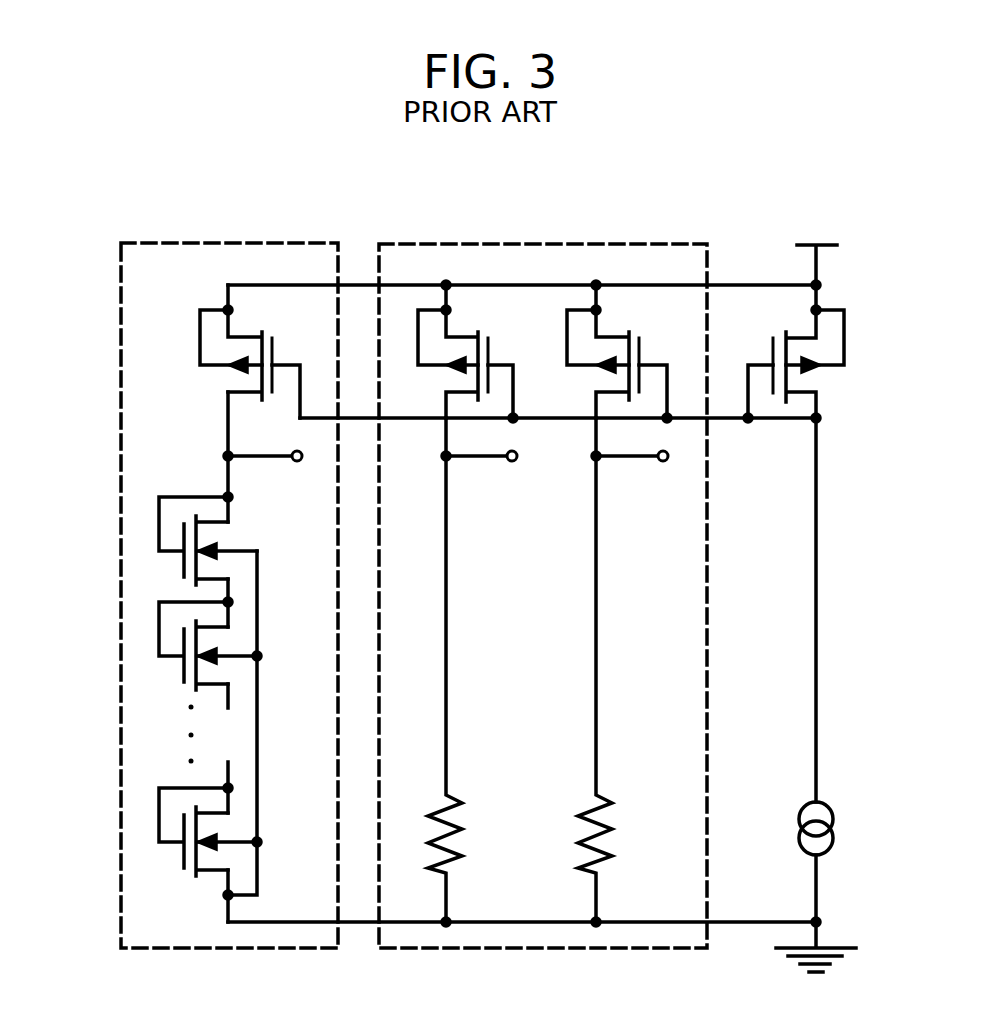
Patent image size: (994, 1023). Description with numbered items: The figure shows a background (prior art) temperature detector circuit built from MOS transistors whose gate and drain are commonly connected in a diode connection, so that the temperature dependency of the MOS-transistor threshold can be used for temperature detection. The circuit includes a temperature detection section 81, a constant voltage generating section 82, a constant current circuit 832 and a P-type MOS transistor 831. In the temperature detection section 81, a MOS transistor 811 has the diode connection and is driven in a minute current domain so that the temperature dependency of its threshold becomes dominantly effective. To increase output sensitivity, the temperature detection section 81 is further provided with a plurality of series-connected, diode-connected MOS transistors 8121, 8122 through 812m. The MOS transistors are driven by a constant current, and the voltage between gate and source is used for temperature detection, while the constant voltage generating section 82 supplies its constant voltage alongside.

The temperature detection section 81 is at (285, 243).
The constant voltage generating section 82 is at (647, 244).
The MOS transistor 811 is at (246, 329).
The series-connected MOS transistor 8121 is at (162, 563).
The series-connected MOS transistor 8122 is at (162, 672).
The series-connected MOS transistor 812m is at (162, 862).
The P-type MOS transistor 831 is at (797, 330).
The constant current circuit 832 is at (840, 822).